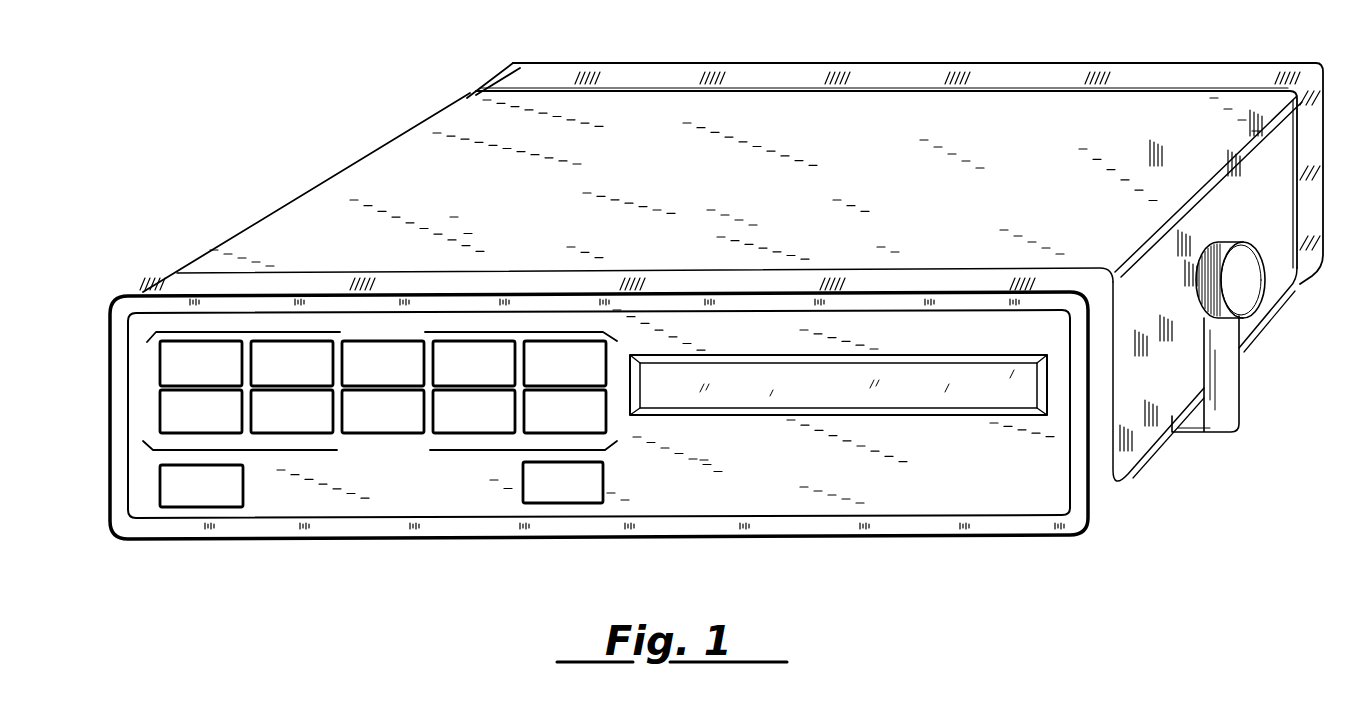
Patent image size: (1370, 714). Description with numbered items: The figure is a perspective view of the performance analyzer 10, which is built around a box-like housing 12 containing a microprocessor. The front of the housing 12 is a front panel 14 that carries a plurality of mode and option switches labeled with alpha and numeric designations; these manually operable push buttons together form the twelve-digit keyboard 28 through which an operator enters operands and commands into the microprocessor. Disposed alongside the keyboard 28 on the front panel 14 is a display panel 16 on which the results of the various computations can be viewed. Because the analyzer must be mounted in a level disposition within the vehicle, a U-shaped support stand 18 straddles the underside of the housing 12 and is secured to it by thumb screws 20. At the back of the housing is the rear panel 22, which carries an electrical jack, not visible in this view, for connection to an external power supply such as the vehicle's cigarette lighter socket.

The performance analyzer 10 is at (325, 143).
The housing 12 is at (769, 200).
The front panel 14 is at (964, 484).
The display panel 16 is at (810, 382).
The U-shaped support stand 18 is at (1221, 380).
The thumb screws 20 is at (1248, 284).
The rear panel 22 is at (1137, 60).
The twelve-digit keyboard 28 is at (464, 470).